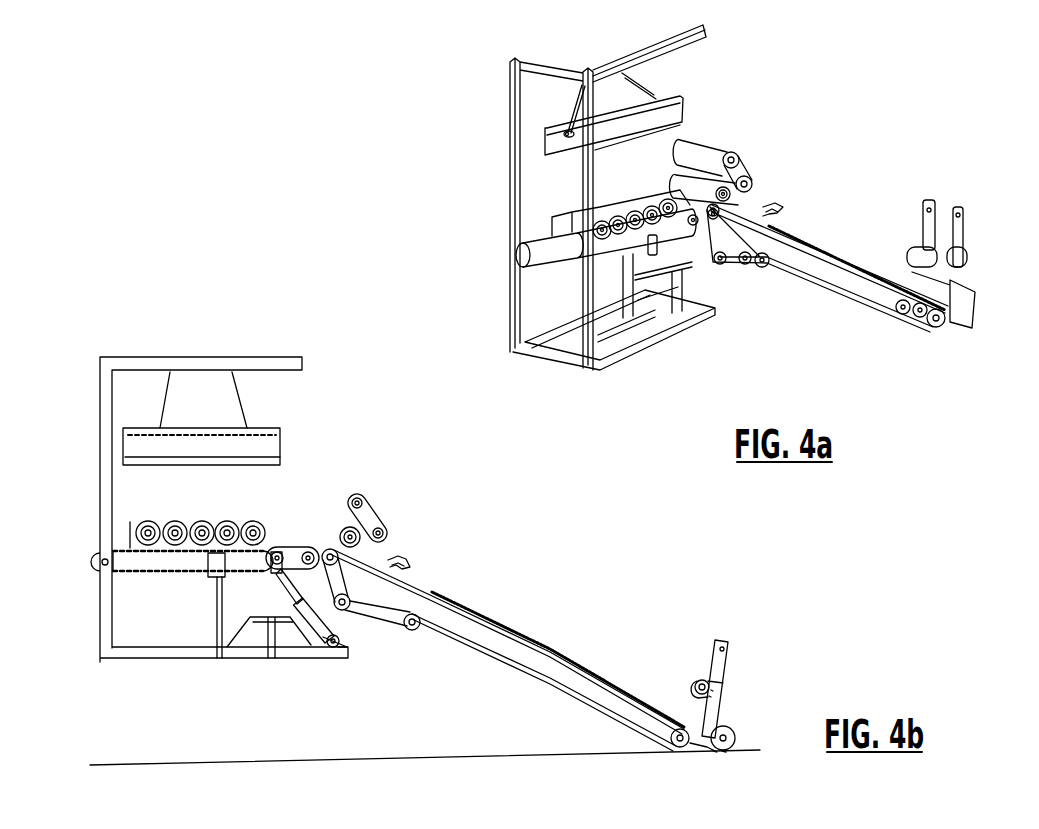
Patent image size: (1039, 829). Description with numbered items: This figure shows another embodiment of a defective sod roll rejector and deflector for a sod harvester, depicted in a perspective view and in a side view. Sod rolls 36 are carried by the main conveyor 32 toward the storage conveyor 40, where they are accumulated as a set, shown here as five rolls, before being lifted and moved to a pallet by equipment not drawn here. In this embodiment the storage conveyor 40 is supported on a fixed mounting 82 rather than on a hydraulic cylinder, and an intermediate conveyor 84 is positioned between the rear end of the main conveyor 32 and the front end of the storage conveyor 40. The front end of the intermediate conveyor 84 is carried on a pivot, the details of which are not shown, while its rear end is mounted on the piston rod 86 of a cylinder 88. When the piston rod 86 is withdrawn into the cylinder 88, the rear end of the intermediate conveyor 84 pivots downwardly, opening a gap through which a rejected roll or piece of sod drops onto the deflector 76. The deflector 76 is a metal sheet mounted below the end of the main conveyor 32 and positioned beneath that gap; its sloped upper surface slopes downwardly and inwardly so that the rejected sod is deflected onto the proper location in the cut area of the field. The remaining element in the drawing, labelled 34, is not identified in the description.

In FIG. 4A, the main conveyor 32 is at (841, 263).
In FIG. 4B, the main conveyor 32 is at (528, 650).
In FIG. 4A, the pinch roller assembly 34 is at (738, 157).
In FIG. 4B, the pinch roller assembly 34 is at (401, 502).
In FIG. 4B, the sod rolls 36 is at (331, 509).
In FIG. 4A, the storage conveyor 40 is at (600, 228).
In FIG. 4B, the storage conveyor 40 is at (193, 525).
In FIG. 4B, the deflector 76 is at (267, 680).
In FIG. 4B, the fixed mounting 82 is at (181, 617).
In FIG. 4B, the intermediate conveyor 84 is at (286, 517).
In FIG. 4B, the piston rod 86 is at (266, 595).
In FIG. 4B, the cylinder 88 is at (321, 656).